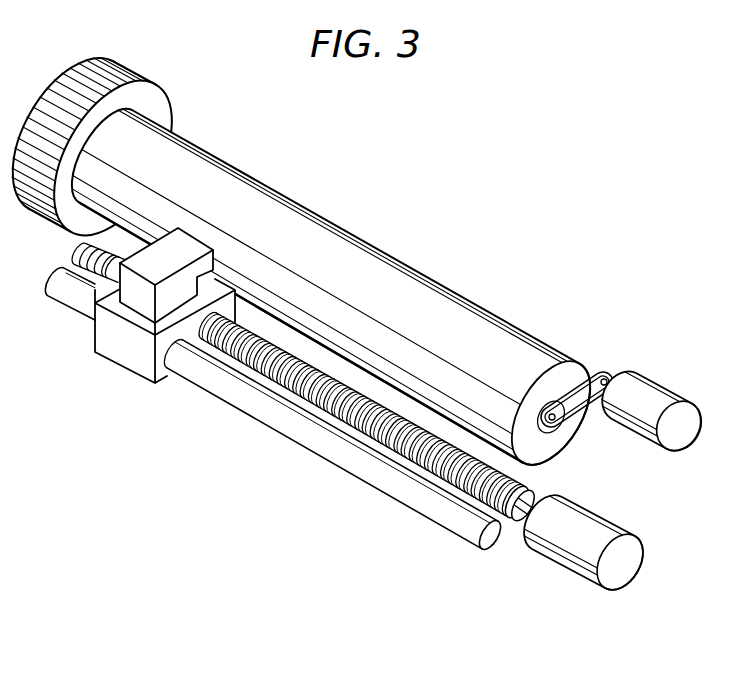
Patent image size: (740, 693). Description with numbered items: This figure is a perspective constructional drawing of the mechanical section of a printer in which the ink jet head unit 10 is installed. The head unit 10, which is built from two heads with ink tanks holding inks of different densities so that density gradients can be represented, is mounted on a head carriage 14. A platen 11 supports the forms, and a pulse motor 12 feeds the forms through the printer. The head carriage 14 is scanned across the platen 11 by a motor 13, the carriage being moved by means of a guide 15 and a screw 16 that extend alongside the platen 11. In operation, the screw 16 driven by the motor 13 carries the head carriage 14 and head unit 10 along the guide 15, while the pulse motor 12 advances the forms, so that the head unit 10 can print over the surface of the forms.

The ink jet head unit 10 is at (190, 246).
The platen 11 is at (518, 338).
The pulse motor 12 is at (657, 385).
The motor 13 is at (568, 565).
The head carriage 14 is at (137, 363).
The guide 15 is at (325, 450).
The screw 16 is at (520, 487).